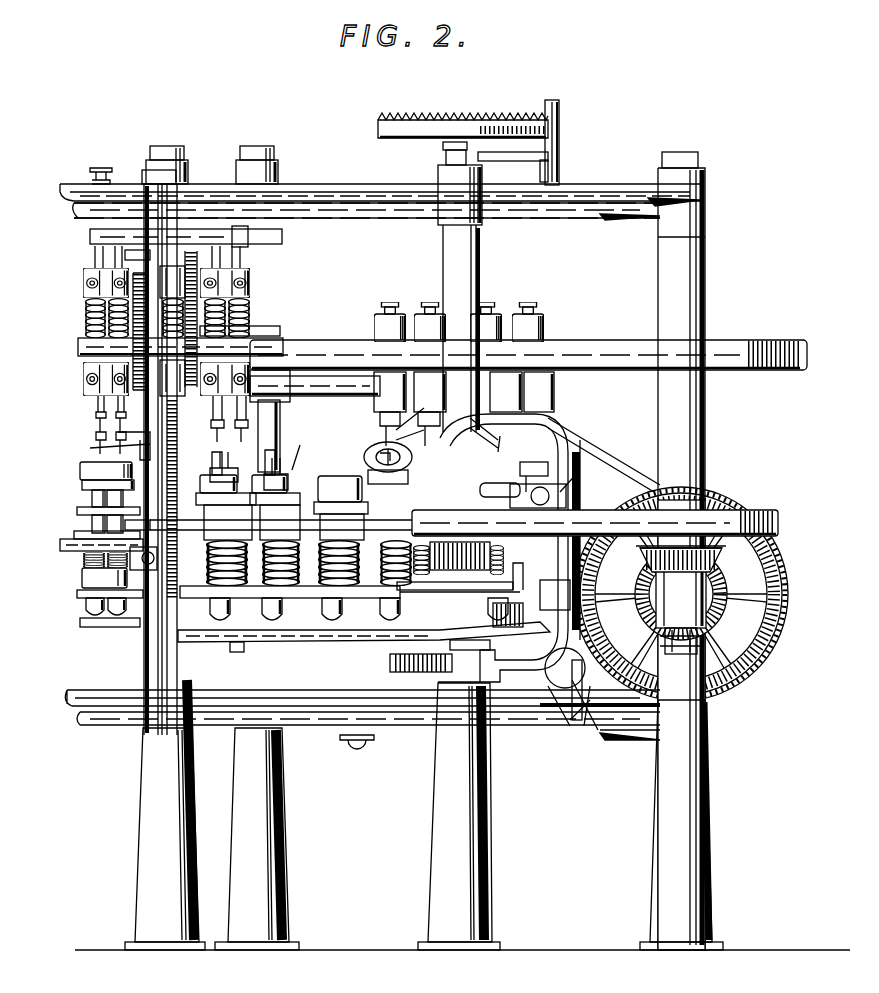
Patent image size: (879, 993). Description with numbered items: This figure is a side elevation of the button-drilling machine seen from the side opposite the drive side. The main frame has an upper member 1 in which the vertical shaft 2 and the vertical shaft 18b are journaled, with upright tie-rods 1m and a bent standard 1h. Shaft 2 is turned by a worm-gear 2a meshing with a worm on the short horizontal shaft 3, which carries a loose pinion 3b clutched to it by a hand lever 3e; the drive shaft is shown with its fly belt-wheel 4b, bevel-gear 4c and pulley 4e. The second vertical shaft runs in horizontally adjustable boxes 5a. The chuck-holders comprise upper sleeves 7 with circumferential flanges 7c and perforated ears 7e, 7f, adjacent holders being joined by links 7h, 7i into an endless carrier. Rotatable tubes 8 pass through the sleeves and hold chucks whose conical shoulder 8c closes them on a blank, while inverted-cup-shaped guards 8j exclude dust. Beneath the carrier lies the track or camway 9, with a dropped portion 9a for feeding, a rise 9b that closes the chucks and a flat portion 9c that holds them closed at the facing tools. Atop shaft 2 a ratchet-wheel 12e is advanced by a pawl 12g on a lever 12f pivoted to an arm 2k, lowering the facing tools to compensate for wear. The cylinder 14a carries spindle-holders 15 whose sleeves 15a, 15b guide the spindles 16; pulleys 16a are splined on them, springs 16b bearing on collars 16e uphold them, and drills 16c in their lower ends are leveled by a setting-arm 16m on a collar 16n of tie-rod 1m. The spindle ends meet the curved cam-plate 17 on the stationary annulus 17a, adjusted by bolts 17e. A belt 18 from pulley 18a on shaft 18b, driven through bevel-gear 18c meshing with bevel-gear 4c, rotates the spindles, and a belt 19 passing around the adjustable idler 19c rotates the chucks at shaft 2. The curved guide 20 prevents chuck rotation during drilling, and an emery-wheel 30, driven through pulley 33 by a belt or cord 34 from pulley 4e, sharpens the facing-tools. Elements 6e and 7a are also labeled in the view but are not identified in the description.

The upper member of the main frame 1 is at (612, 190).
The standard of the main frame 1h is at (570, 490).
The upright tie-rod 1m is at (146, 660).
The vertical shaft 2 is at (464, 138).
The worm-gear 2a is at (388, 662).
The arm 2k is at (520, 152).
The short horizontal shaft 3 is at (556, 716).
The loose pinion 3b is at (580, 722).
The lever 3e is at (362, 744).
The fly belt-wheel 4b is at (752, 668).
The bevel-gear 4c is at (712, 600).
The pulley 4e is at (760, 634).
The boxes 5a is at (196, 182).
The lever arm 6e is at (536, 462).
The upper sleeve 7 is at (90, 500).
The spool holder bracket 7a is at (82, 580).
The circumferential flanges 7c is at (82, 474).
The perforated ears 7e is at (288, 500).
The perforated ears 7f is at (316, 592).
The links 7h is at (370, 464).
The links 7i is at (316, 620).
The rotatable tubes 8 is at (236, 468).
The conical shoulder 8c is at (76, 533).
The inverted-cup-shaped guards 8j is at (395, 444).
The track or camway 9 is at (178, 638).
The dropped portion of the track 9a is at (236, 652).
The rise in the track 9b is at (480, 636).
The flat portion of the track 9c is at (524, 620).
The ratchet-wheel 12e is at (463, 108).
The lever 12f is at (566, 128).
The pawl 12g is at (556, 112).
The cylinder 14a is at (147, 268).
The spindle-holders 15 is at (88, 322).
The upper sleeve of spindle-holder 15a is at (256, 274).
The lower sleeve of spindle-holder 15b is at (86, 386).
The spindles 16 is at (90, 334).
The pulleys 16a is at (82, 358).
The springs 16b is at (282, 338).
The drills 16c is at (96, 410).
The collars 16e is at (86, 284).
The setting-arm 16m is at (96, 434).
The collar 16n is at (150, 448).
The curved cam-plate 17 is at (286, 238).
The stationary annulus 17a is at (253, 212).
The bolts 17e is at (90, 176).
The belt 18 is at (353, 330).
The pulley 18a is at (776, 372).
The vertical shaft 18b is at (708, 294).
The bevel-gear 18c is at (724, 560).
The belt 19 is at (592, 524).
The adjustable idler 19c is at (520, 476).
The curved guide 20 is at (62, 546).
The emery-wheel 30 is at (372, 446).
The pulley 33 is at (378, 372).
The belt or cord 34 is at (584, 426).